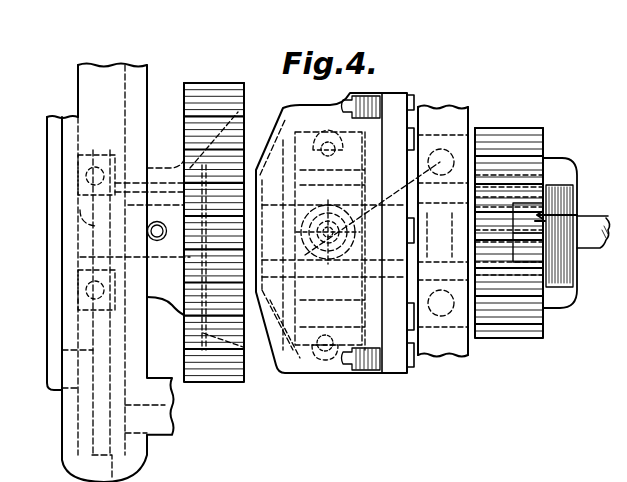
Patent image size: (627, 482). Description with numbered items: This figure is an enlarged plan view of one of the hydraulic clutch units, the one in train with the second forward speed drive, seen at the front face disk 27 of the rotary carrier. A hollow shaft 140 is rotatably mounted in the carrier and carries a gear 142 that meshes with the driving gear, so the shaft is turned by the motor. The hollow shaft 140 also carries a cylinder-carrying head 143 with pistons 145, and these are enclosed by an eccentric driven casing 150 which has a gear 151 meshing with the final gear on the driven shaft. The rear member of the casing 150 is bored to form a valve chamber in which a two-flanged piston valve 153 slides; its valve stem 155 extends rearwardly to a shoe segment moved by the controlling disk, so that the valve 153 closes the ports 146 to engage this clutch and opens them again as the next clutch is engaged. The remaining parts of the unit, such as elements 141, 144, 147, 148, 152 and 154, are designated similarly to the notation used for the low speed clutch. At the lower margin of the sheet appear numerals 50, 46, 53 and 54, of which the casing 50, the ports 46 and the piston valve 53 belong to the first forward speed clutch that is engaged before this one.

The front face disk 27 is at (93, 84).
The bearing 141 is at (90, 177).
The hollow shaft 140 is at (80, 228).
The gear 142 is at (215, 376).
The cylinder-carrying head 143 is at (287, 150).
The pistons 145 is at (308, 140).
The eccentric driven casing 150 is at (355, 93).
The ports 146 is at (438, 148).
The piston valve 153 is at (419, 212).
The hub 152 is at (470, 128).
The gear 151 is at (525, 133).
The threaded shaft end 154 is at (577, 212).
The valve stem 155 is at (585, 244).
The clutch element 148 is at (290, 352).
The clutch element 147 is at (313, 358).
The screw 144 is at (350, 363).
The casing 50 is at (371, 478).
The ports 46 is at (417, 469).
The piston valve 53 is at (471, 473).
The element 54 is at (544, 473).